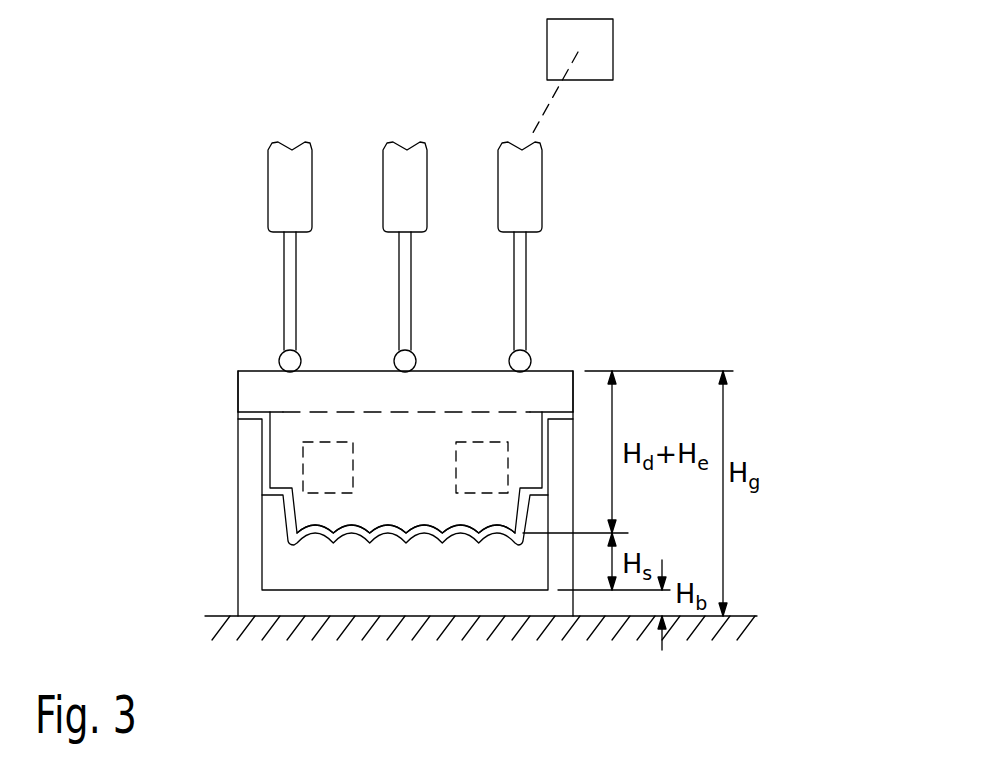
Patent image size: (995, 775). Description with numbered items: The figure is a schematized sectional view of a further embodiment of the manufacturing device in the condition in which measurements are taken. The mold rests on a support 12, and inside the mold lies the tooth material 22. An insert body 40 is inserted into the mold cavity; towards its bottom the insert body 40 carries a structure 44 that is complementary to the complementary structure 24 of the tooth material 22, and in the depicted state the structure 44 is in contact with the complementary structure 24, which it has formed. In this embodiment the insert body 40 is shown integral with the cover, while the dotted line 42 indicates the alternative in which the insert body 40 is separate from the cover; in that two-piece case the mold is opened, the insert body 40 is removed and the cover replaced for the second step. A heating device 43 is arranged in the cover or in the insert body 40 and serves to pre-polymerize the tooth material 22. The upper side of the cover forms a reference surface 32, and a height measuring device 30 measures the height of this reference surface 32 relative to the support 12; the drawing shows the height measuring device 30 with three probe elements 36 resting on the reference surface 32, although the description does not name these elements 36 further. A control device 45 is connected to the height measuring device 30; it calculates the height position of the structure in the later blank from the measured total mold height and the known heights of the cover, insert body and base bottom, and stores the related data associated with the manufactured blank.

The height measuring device 30 is at (429, 90).
The control device 45 is at (600, 47).
The electrodes 36 is at (290, 268).
The reference surface 32 is at (558, 371).
The dotted line 42 is at (438, 412).
The insert body 40 is at (419, 482).
The heating device 43 is at (341, 482).
The tooth material 22 is at (432, 579).
The structure 44 is at (317, 528).
The complementary structure 24 is at (383, 536).
The support 12 is at (222, 616).